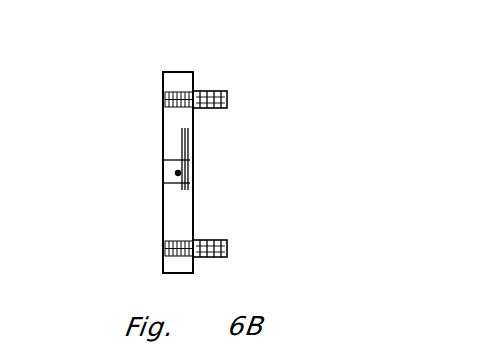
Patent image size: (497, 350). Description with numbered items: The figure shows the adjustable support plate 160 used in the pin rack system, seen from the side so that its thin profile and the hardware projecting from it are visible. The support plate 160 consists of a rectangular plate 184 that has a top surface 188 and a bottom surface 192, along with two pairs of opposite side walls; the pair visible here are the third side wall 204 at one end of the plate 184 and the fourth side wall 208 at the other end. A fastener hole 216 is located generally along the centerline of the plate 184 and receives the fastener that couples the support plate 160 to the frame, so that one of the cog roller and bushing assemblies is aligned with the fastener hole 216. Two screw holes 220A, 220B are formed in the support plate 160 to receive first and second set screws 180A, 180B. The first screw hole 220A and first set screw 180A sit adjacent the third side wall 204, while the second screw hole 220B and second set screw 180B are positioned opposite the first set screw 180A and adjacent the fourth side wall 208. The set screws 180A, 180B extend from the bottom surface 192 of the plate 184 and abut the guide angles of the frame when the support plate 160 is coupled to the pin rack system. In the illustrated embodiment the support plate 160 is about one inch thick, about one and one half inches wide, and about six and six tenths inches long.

The adjustable support plate 160 is at (130, 122).
The third side wall 204 is at (184, 72).
The fourth side wall 208 is at (176, 274).
The first set screw 180A is at (215, 108).
The second set screw 180B is at (215, 257).
The first screw hole 220A is at (163, 98).
The second screw hole 220B is at (163, 247).
The fastener hole 216 is at (163, 160).
The top surface 188 is at (163, 193).
The rectangular plate 184 is at (168, 211).
The bottom surface 192 is at (193, 153).